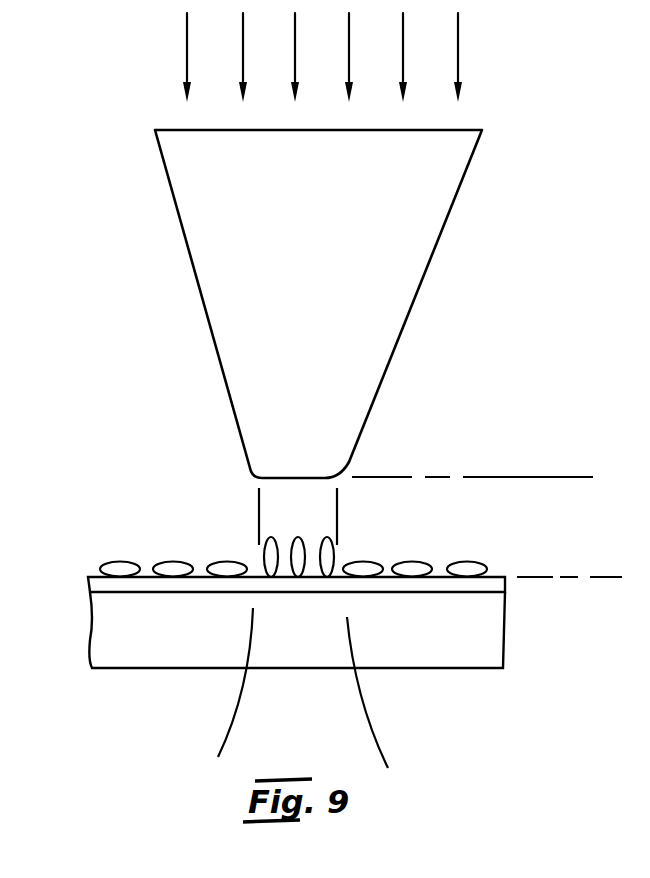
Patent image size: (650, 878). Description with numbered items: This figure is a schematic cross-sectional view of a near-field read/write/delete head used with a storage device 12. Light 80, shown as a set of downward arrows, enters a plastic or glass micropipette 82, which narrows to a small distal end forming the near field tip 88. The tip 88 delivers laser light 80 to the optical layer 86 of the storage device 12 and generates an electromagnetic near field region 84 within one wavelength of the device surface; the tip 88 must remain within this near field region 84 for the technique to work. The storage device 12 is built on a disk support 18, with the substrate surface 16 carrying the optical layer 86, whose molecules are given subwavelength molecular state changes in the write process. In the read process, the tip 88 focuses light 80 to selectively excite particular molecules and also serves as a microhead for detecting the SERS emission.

The SERS storage device 12 is at (297, 622).
The substrate surface 16 is at (507, 587).
The disk support 18 is at (503, 634).
The light 80 is at (458, 56).
The micropipette 82 is at (453, 203).
The near field region 84 is at (470, 537).
The optical layer 86 is at (473, 563).
The near field tip 88 is at (283, 478).